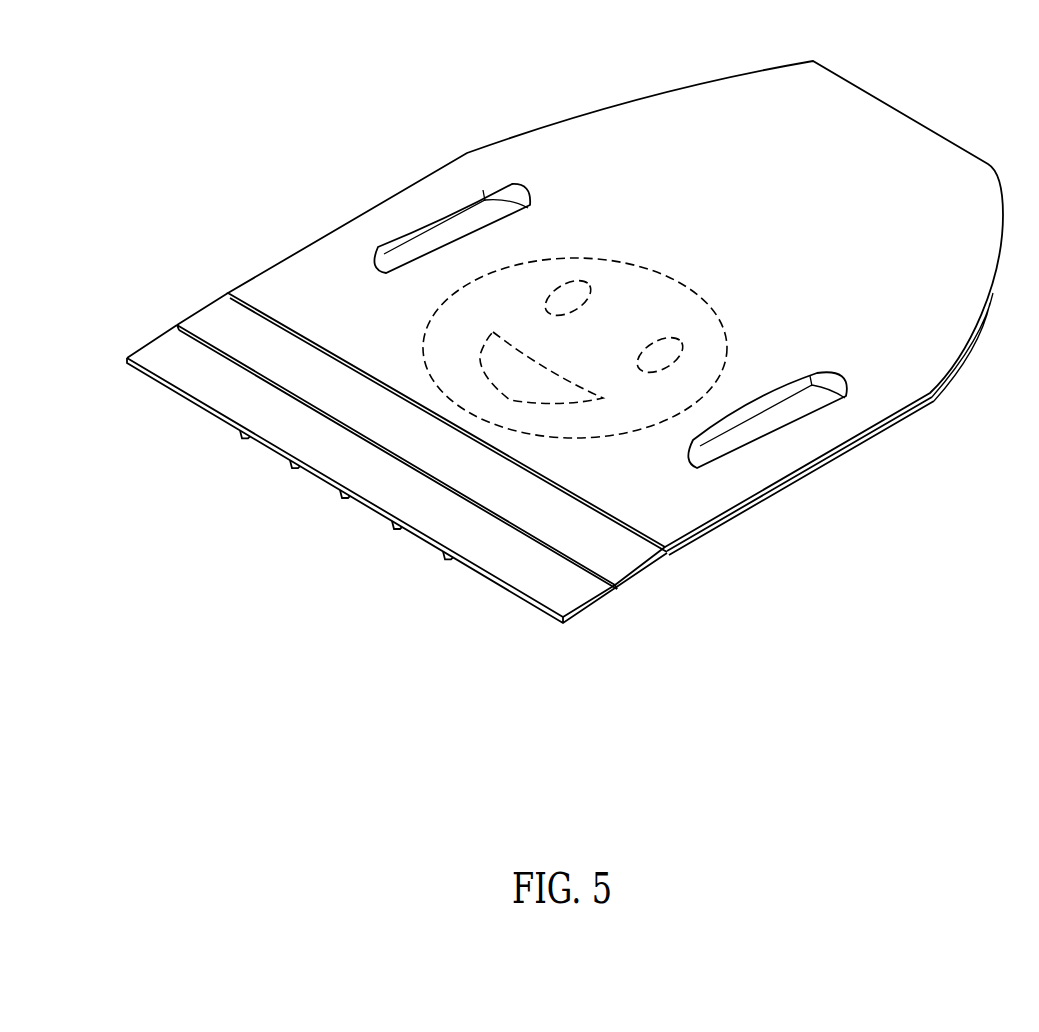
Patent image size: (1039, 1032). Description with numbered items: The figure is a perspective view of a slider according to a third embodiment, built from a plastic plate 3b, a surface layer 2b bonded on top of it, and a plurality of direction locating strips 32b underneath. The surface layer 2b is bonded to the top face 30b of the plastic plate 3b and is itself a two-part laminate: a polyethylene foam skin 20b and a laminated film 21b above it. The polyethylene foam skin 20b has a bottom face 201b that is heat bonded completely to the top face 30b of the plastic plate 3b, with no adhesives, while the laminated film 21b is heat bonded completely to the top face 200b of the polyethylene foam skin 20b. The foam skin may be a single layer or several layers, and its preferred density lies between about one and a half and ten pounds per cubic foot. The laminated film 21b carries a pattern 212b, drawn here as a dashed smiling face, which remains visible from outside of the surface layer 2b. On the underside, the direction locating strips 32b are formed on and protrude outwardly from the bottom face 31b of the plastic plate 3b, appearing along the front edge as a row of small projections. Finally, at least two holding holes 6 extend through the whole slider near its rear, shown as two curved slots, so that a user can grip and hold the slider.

The surface layer 2b is at (615, 358).
The laminated film 21b is at (697, 513).
The polyethylene foam skin 20b is at (628, 560).
The pattern 212b is at (607, 260).
The holding holes 6 is at (505, 203).
The top face of the polyethylene foam skin 200b is at (449, 470).
The bottom face of the polyethylene foam skin 201b is at (563, 560).
The plastic plate 3b is at (372, 445).
The top face of the plastic plate 30b is at (160, 343).
The bottom face of the plastic plate 31b is at (203, 412).
The direction locating strips 32b is at (242, 437).